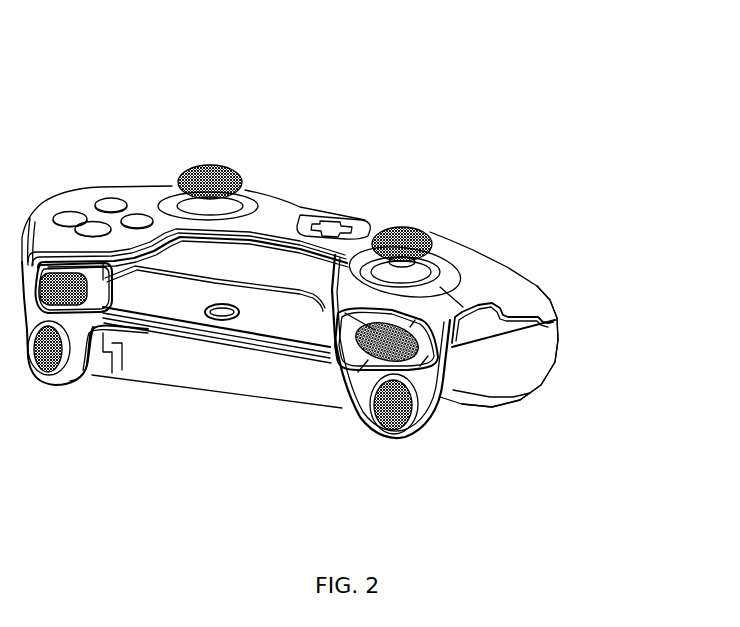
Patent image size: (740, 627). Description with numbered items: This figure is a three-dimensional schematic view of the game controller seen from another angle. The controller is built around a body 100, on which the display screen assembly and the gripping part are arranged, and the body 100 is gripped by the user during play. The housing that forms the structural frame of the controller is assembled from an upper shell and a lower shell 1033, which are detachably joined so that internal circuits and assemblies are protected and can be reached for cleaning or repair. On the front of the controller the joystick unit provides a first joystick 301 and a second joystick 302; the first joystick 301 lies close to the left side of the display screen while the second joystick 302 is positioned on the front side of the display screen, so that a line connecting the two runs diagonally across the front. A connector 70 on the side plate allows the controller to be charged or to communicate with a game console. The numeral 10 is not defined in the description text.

The game controller housing 10 is at (443, 250).
The first joystick 301 is at (212, 165).
The second joystick 302 is at (413, 227).
The connector 70 is at (212, 320).
The body 100 is at (528, 350).
The lower shell 1033 is at (497, 377).